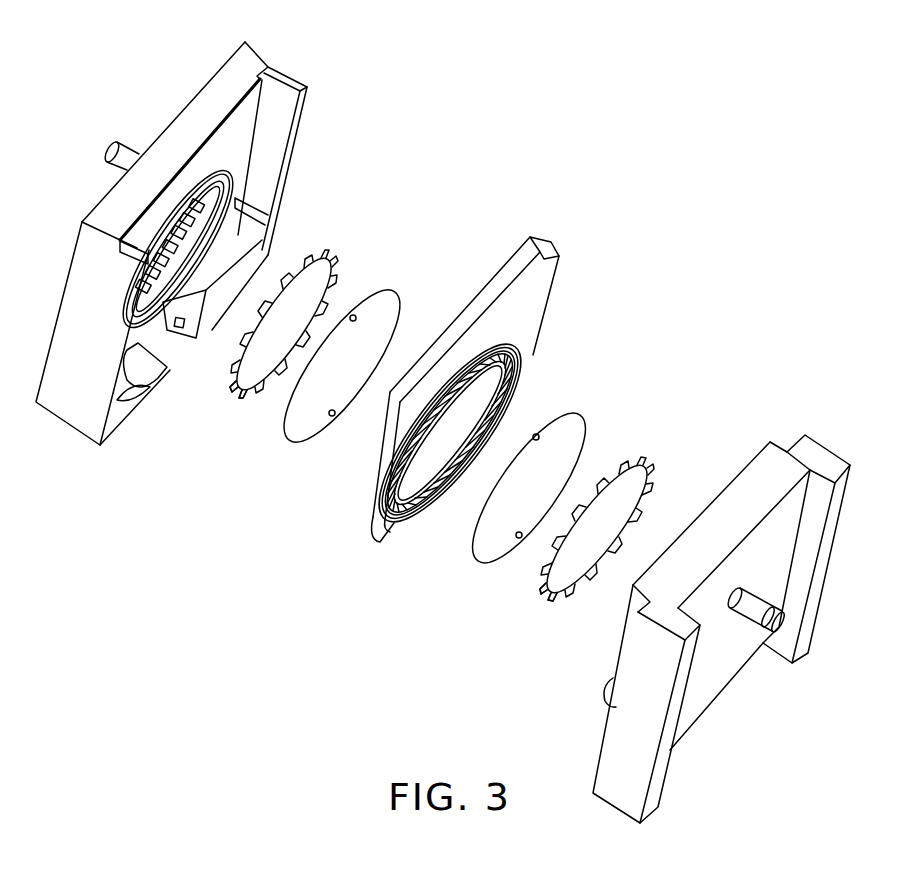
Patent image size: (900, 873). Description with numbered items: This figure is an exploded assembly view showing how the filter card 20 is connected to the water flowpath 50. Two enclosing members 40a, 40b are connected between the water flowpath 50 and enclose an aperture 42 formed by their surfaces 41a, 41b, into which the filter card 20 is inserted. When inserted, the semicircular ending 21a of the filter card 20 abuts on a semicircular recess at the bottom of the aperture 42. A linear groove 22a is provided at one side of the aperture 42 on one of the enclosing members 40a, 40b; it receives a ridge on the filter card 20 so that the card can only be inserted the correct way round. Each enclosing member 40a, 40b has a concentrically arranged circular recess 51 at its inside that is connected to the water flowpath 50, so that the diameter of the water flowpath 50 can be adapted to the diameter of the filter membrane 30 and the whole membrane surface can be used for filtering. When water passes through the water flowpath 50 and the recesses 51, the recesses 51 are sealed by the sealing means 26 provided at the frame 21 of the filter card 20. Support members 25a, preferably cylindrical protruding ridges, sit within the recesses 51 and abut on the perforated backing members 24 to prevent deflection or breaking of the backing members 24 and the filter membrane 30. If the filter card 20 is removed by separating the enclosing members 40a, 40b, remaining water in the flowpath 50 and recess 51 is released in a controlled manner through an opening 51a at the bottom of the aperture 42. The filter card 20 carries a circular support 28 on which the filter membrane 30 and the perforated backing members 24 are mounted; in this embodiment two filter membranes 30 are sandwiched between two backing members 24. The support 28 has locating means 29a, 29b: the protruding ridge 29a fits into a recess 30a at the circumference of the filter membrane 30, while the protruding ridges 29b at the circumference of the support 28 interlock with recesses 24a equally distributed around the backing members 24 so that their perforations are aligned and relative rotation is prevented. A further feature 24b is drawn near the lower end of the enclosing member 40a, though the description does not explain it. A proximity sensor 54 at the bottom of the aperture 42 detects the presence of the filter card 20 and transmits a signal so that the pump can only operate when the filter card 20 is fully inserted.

The filter card 20 is at (546, 240).
The frame 21 is at (550, 277).
The semicircular ending 21a is at (380, 545).
The linear groove 22a is at (258, 66).
The perforated backing member 24 is at (322, 266).
The recesses 24a is at (235, 390).
The engaging portion 24b is at (207, 302).
The support members 25a is at (185, 188).
The sealing means 26 is at (364, 522).
The circular support 28 is at (507, 374).
The locating means 29a is at (455, 485).
The protruding ridges 29b is at (400, 474).
The filter membrane 30 is at (394, 300).
The recess 30a is at (353, 318).
The enclosing member 40a is at (63, 413).
The enclosing member 40b is at (822, 457).
The surface 41a is at (253, 112).
The surface 41b is at (742, 467).
The aperture 42 is at (230, 130).
The water flowpath 50 is at (106, 140).
The circular recess 51 is at (130, 230).
The opening 51a is at (157, 343).
The proximity sensor 54 is at (178, 335).